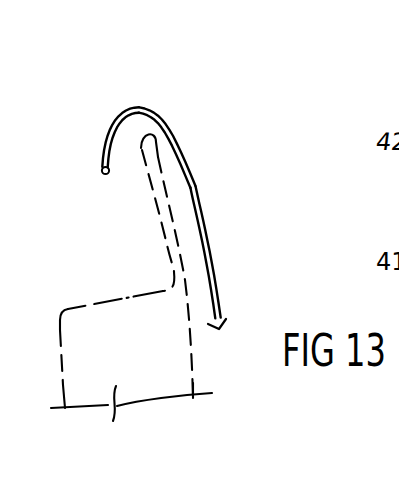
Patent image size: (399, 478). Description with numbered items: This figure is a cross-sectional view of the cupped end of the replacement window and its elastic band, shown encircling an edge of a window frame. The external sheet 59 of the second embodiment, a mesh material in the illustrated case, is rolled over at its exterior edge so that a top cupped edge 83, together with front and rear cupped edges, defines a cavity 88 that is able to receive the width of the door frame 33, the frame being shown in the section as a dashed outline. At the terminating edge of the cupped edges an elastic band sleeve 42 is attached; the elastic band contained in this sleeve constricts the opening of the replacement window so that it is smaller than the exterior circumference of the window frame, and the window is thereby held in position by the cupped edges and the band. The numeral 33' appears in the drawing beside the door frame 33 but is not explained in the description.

The hook arm 83 is at (143, 109).
The hook bend 88 is at (145, 128).
The hook leg 59 is at (203, 242).
The eyelet 42 is at (103, 180).
The inner pin 33' is at (120, 212).
The pin / phantom body 33 is at (160, 273).